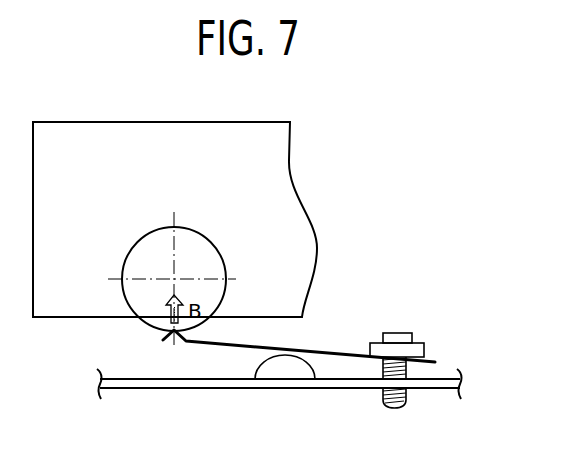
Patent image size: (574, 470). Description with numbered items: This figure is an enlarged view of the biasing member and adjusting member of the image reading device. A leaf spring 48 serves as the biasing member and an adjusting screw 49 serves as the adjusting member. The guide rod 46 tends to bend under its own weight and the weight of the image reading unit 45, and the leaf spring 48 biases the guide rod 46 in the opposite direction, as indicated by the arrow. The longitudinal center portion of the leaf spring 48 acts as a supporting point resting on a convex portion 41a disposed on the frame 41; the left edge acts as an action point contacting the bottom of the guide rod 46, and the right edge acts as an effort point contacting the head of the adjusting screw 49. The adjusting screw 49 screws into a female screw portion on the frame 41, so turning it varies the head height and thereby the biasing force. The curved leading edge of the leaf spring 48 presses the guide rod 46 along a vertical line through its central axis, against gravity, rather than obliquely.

The image reading unit 45 is at (264, 121).
The guide rod 46 is at (206, 236).
The leaf spring 48 is at (221, 347).
The frame 41 is at (150, 390).
The convex portion 41a is at (285, 377).
The adjusting screw 49 is at (397, 333).